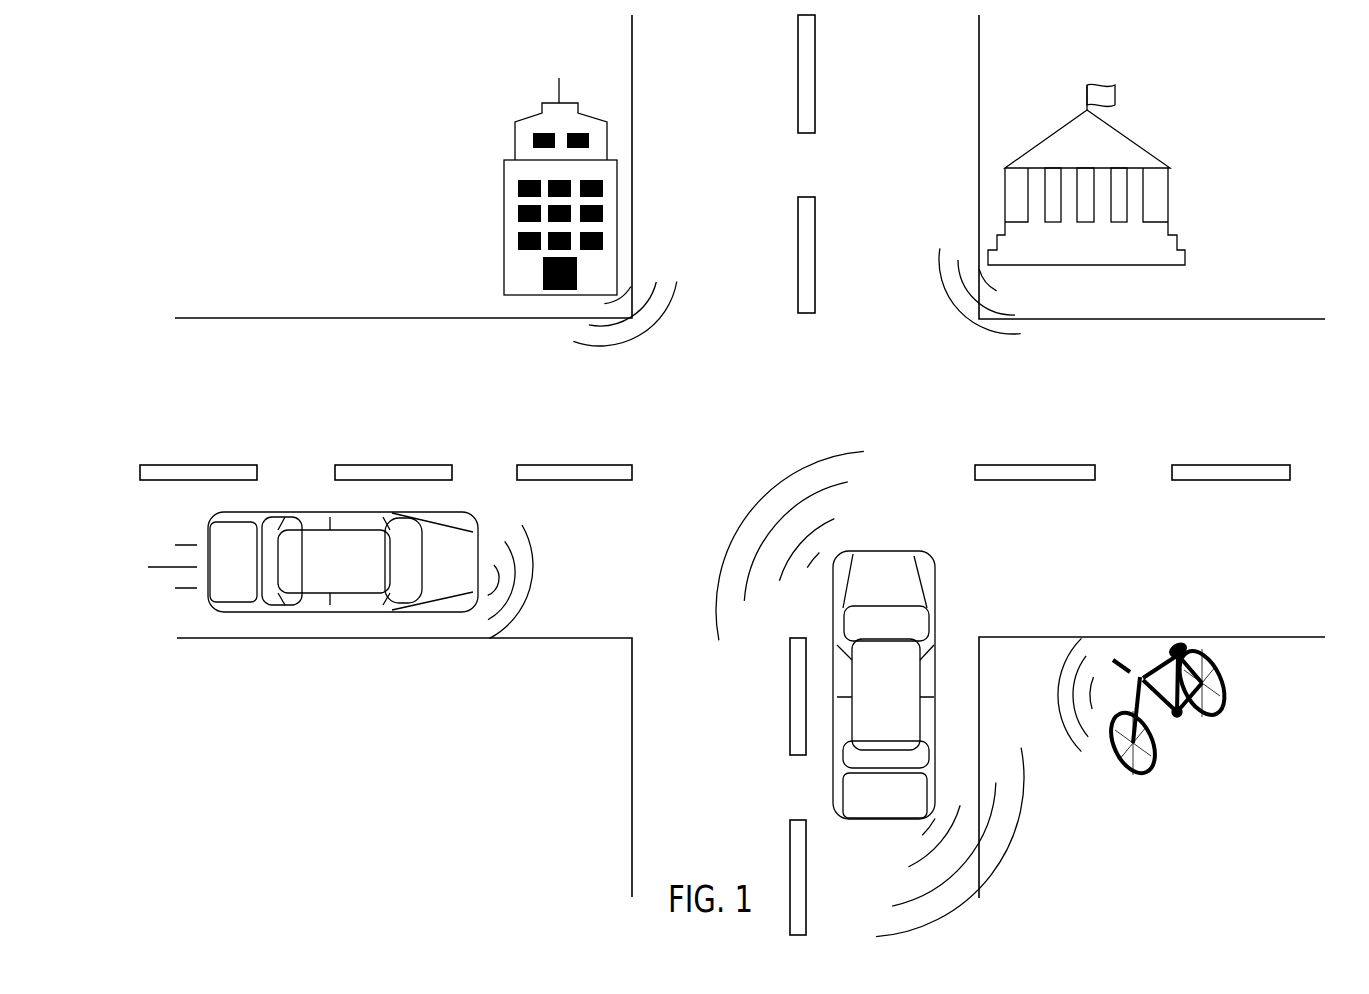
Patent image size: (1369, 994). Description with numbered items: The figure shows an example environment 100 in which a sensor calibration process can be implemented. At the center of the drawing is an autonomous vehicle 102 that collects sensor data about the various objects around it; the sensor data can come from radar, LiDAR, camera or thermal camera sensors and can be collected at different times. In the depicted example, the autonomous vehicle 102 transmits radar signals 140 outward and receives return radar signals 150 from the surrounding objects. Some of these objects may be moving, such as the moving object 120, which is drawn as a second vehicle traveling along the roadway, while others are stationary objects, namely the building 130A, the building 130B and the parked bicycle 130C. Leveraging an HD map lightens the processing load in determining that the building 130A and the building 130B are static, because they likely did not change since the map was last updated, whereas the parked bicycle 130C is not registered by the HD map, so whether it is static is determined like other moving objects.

The environment 100 is at (234, 94).
The autonomous vehicle 102 is at (909, 551).
The moving object 120 is at (458, 512).
The building 130A is at (618, 232).
The building 130B is at (1185, 262).
The parked bicycle 130C is at (1182, 637).
The radar signals 140 is at (788, 480).
The return radar signals 150 is at (668, 315).